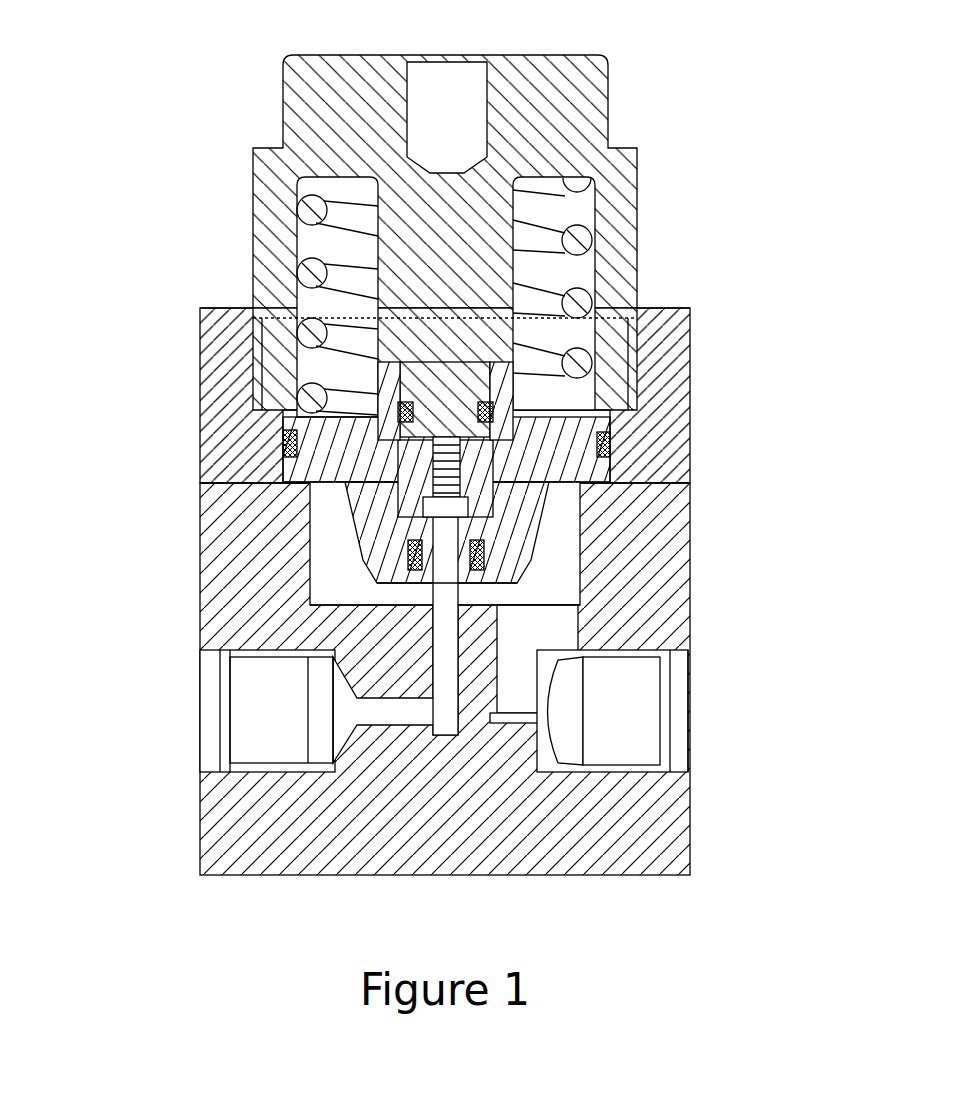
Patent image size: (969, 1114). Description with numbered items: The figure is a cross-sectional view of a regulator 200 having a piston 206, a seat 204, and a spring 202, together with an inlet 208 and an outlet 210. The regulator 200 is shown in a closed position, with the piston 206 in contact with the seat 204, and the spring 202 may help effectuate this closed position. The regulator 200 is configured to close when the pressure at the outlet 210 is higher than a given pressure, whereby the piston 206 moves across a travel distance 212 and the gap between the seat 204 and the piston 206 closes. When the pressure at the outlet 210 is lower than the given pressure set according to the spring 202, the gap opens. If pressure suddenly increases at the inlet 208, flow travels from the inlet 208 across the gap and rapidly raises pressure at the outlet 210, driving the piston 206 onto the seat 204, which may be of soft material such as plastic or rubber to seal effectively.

The regulator 200 is at (151, 187).
The spring 202 is at (548, 226).
The seat 204 is at (447, 484).
The piston 206 is at (498, 535).
The inlet 208 is at (282, 697).
The outlet 210 is at (598, 722).
The travel distance 212 is at (380, 595).